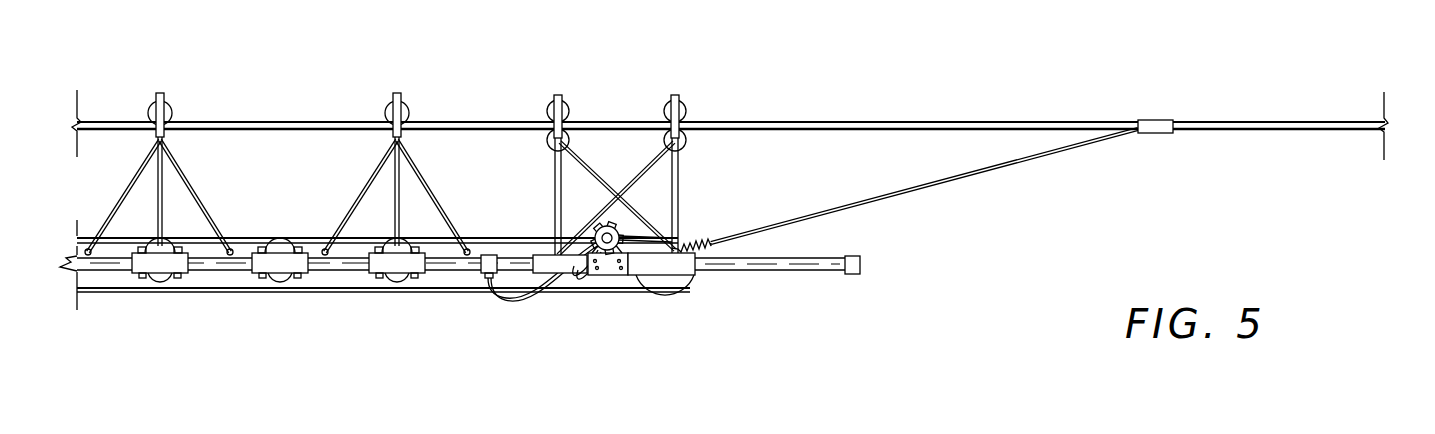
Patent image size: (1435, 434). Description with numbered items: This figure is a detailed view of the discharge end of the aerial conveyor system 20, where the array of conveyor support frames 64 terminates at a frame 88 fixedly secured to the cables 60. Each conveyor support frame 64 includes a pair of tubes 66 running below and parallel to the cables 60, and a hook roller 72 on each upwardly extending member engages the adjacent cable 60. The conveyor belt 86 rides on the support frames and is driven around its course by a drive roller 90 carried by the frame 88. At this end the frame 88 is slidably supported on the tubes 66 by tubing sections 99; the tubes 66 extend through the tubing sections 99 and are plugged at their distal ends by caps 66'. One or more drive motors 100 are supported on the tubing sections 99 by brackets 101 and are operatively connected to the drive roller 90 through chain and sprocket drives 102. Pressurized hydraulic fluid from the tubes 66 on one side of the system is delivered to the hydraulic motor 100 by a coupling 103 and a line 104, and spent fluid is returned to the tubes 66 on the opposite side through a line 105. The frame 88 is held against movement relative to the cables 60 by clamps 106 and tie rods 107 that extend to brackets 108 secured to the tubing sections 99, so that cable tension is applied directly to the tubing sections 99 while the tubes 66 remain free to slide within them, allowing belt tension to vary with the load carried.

The aerial conveyor system 20 is at (335, 96).
The cables 60 is at (830, 122).
The conveyor support frame 64 is at (260, 150).
The tubes 66 is at (296, 291).
The caps 66' is at (806, 280).
The hook roller 72 is at (148, 107).
The conveyor belt 86 is at (257, 238).
The frame 88 is at (548, 172).
The drive roller 90 is at (672, 284).
The tubing sections 99 is at (560, 273).
The drive motor 100 is at (597, 229).
The brackets 101 is at (620, 275).
The chain and sprocket drive 102 is at (641, 232).
The coupling 103 is at (490, 255).
The line 104 is at (515, 302).
The line 105 is at (589, 284).
The clamps 106 is at (1168, 120).
The tie rods 107 is at (876, 198).
The brackets 108 is at (681, 246).